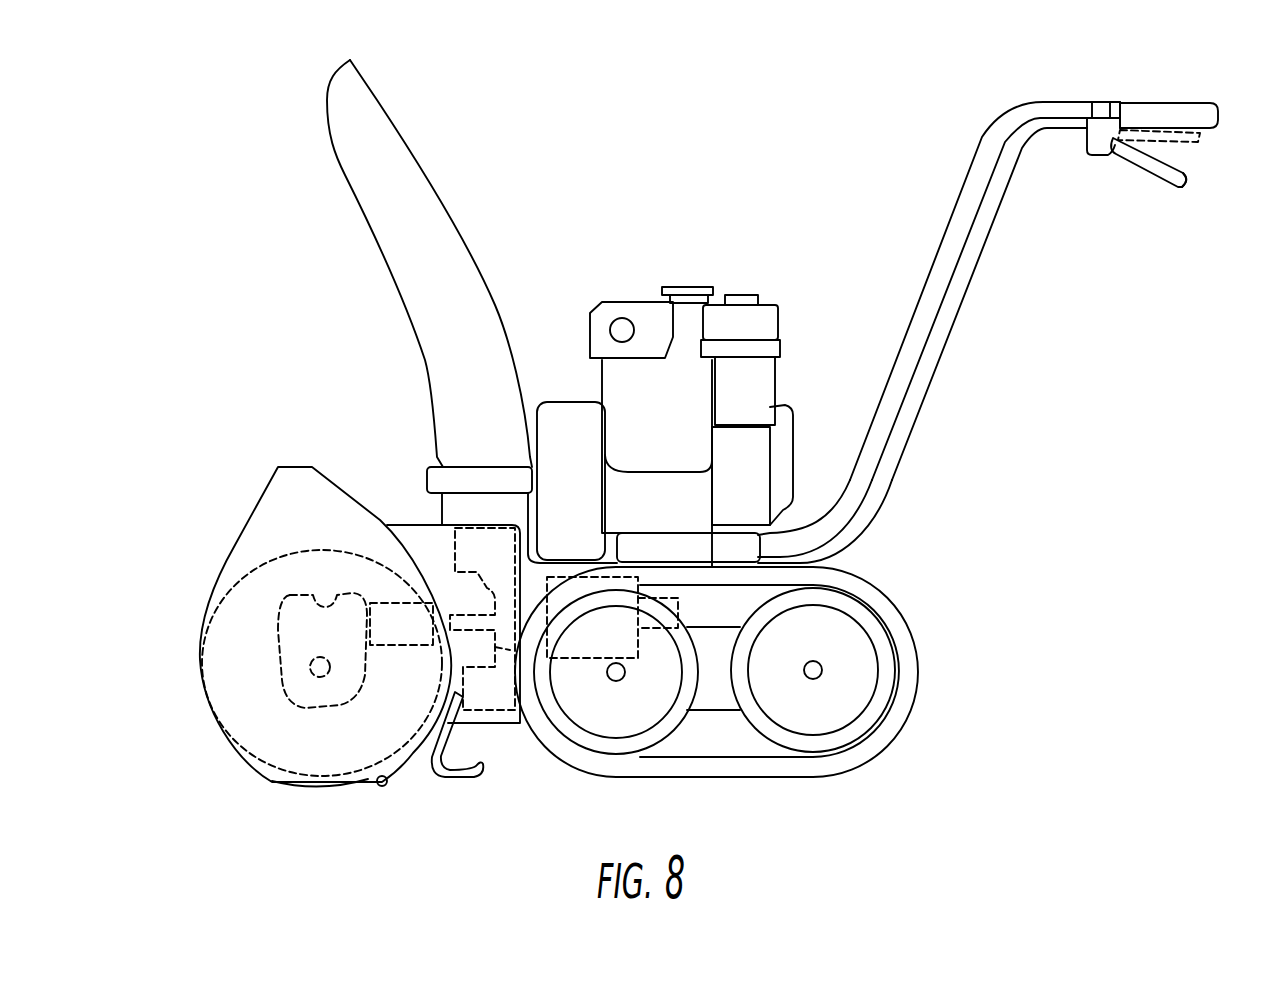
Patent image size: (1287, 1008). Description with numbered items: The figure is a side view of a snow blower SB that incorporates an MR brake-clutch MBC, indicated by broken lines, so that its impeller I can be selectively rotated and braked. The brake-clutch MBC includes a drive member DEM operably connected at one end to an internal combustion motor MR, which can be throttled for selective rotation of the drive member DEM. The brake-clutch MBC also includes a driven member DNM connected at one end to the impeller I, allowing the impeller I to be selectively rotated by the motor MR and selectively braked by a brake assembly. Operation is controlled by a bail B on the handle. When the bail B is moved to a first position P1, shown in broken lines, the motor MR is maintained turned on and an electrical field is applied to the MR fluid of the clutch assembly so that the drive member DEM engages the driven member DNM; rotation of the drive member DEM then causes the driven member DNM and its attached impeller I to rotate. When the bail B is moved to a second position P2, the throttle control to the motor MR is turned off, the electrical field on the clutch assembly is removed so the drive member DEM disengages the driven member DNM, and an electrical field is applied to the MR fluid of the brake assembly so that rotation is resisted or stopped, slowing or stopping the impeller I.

The snow blower SB is at (304, 237).
The motor MR is at (780, 366).
The driven member DNM is at (463, 612).
The impeller I is at (265, 565).
The drive member DEM is at (670, 598).
The MR brake-clutch MBC is at (589, 658).
The bail B is at (1158, 173).
The position P1 is at (1178, 137).
The position P2 is at (1188, 178).